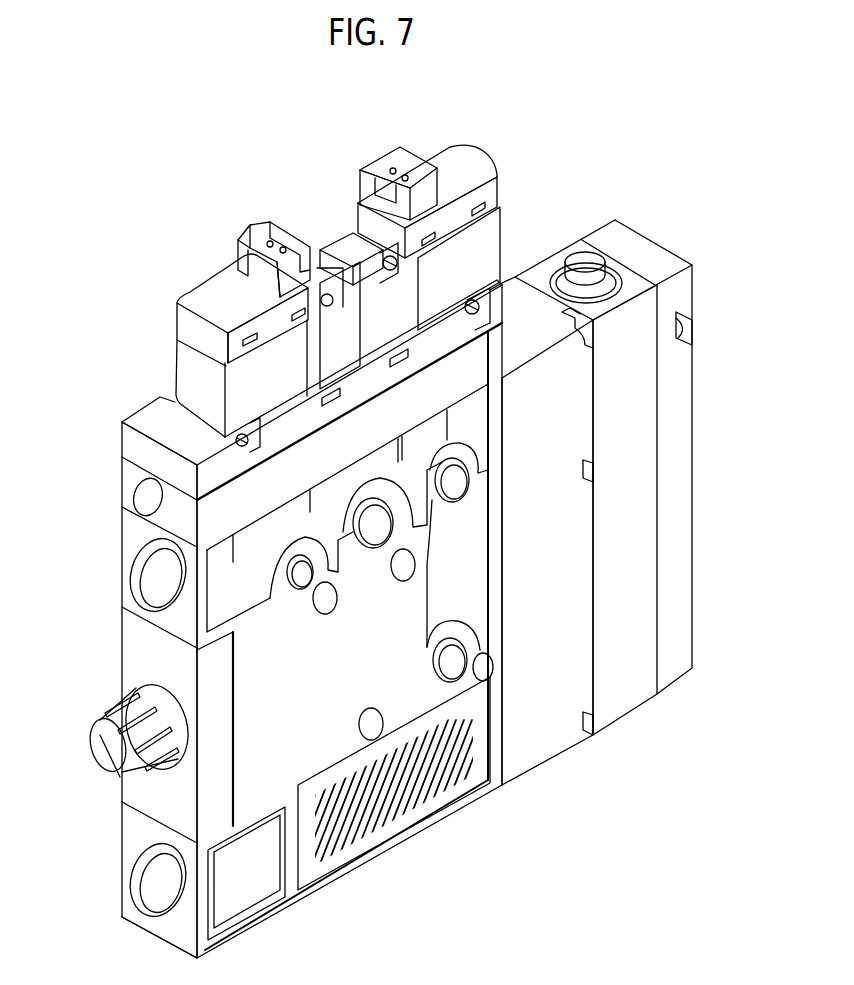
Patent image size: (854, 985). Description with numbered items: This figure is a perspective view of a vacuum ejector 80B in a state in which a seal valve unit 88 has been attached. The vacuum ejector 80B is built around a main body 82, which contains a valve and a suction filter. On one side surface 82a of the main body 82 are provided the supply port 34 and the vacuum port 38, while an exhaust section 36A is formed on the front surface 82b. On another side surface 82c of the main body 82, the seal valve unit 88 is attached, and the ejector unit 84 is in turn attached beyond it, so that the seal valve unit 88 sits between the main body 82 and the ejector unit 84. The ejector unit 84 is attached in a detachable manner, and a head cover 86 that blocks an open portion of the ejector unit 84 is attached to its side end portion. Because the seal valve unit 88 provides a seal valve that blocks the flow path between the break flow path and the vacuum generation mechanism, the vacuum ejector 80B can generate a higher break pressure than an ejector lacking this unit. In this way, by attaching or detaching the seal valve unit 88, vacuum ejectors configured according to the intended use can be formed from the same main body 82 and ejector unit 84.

The vacuum ejector 80B is at (178, 159).
The main body 82 is at (126, 406).
The side surface 82a is at (130, 657).
The front surface 82b is at (250, 747).
The side surface 82c is at (500, 497).
The supply port 34 is at (166, 566).
The vacuum port 38 is at (170, 871).
The exhaust section 36A is at (410, 808).
The ejector unit 84 is at (635, 393).
The head cover 86 is at (674, 455).
The seal valve unit 88 is at (563, 545).